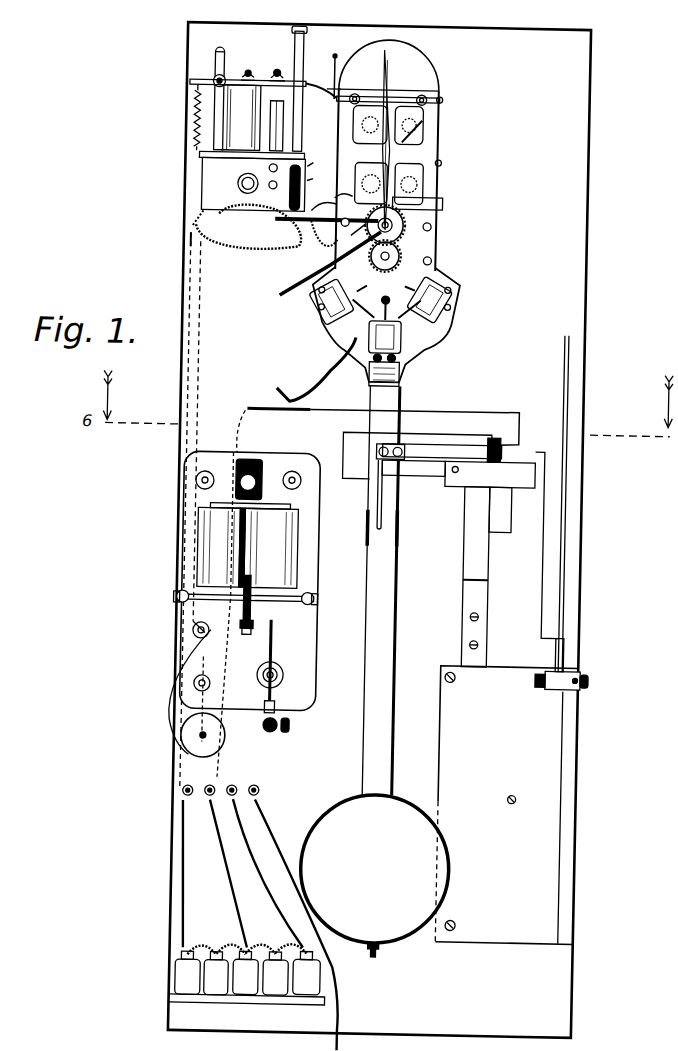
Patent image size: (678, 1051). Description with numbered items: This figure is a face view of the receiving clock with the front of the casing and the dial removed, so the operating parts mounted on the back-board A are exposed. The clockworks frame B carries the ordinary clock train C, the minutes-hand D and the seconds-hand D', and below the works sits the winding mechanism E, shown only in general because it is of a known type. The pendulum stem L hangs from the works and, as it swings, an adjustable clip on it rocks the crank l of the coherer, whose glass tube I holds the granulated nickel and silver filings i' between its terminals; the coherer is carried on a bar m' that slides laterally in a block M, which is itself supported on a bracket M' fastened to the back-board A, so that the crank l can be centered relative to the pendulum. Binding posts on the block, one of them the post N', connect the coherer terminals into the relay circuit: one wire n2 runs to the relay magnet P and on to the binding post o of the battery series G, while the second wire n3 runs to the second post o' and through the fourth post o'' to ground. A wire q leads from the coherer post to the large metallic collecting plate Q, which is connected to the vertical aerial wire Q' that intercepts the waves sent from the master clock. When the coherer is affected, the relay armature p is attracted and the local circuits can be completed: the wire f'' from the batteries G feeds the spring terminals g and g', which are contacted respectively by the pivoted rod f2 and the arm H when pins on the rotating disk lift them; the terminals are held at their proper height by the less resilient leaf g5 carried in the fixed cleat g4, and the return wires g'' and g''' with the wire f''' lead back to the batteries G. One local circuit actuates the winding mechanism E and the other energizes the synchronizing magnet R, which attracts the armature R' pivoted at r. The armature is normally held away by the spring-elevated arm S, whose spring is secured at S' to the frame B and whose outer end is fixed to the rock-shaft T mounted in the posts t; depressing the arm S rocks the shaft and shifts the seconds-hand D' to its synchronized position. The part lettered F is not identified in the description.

The back-board or plate A is at (379, 530).
The magnet R is at (247, 117).
The pivot r is at (221, 78).
The armature R' is at (263, 63).
The wire f'' is at (241, 495).
The wire f''' is at (213, 243).
The return wire g''' is at (174, 306).
The spring terminal g is at (326, 220).
The spring terminal g' is at (345, 195).
The fixed cleat g4 is at (317, 159).
The less resilient leaf g5 is at (317, 177).
The arm H is at (324, 234).
The metallic rod f2 is at (354, 230).
The minutes-hand D is at (346, 173).
The return wire g'' is at (316, 369).
The spring-elevated arm S is at (385, 75).
The securing point of spring S' is at (453, 90).
The rock-shaft T is at (360, 96).
The posts t is at (391, 87).
The frame of the clockworks B is at (434, 188).
The seconds-hand D' is at (439, 126).
The clock train C is at (424, 210).
The escape wheel F is at (412, 231).
The winding mechanism E is at (408, 343).
The pendulum stem L is at (366, 725).
The tube I is at (373, 457).
The crank l is at (372, 491).
The metallic granulated substance i' is at (378, 528).
The bar m' is at (414, 482).
The block M is at (487, 492).
The binding post N' is at (476, 469).
The bracket M' is at (496, 510).
The collecting plate Q is at (508, 715).
The vertical wire Q' is at (560, 639).
The wire q is at (541, 570).
The wire n2 is at (413, 450).
The wire n3 is at (258, 402).
The relay magnet P is at (245, 581).
The armature p is at (231, 614).
The binding post o is at (169, 865).
The binding post o' is at (254, 853).
The binding post o'' is at (293, 906).
The batteries G is at (200, 982).